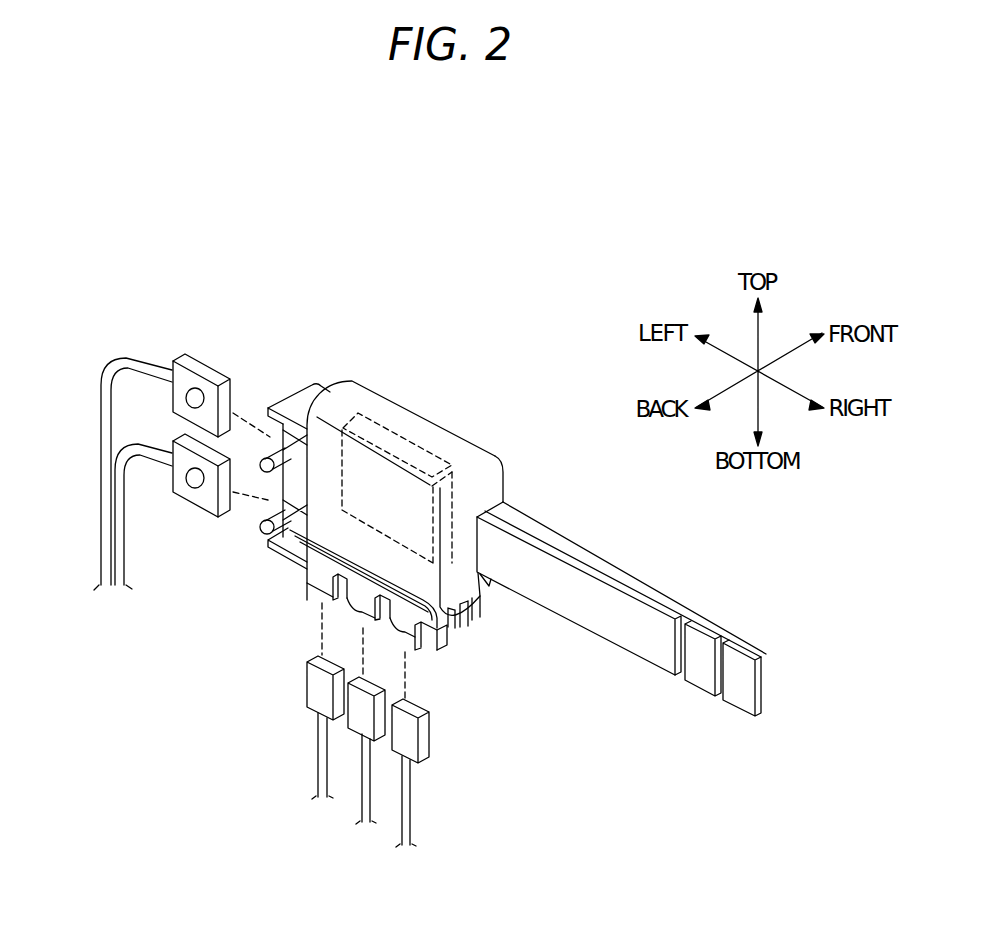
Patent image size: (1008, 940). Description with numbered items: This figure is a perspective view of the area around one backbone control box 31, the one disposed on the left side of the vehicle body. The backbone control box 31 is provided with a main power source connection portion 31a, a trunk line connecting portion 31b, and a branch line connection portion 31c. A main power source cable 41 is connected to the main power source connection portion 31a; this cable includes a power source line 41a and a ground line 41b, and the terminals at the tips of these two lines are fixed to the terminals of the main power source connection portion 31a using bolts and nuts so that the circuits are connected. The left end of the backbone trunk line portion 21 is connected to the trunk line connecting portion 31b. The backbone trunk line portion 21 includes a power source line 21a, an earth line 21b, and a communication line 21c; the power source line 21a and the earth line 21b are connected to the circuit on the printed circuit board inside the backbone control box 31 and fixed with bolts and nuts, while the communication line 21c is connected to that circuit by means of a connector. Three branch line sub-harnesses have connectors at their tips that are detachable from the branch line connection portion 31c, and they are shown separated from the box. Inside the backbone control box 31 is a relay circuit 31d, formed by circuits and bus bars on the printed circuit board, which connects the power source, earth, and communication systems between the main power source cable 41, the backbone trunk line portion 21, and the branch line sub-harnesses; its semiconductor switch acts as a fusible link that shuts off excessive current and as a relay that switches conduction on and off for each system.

The backbone trunk line portion 21 is at (573, 542).
The power source line 21a is at (737, 698).
The earth line 21b is at (700, 683).
The communication line 21c is at (662, 668).
The backbone control box 31 is at (434, 427).
The main power source connection portion 31a is at (289, 383).
The trunk line connecting portion 31b is at (508, 471).
The branch line connection portion 31c is at (298, 577).
The relay circuit 31d is at (391, 432).
The main power source cable 41 is at (97, 500).
The power source line 41a is at (153, 357).
The ground line 41b is at (153, 468).